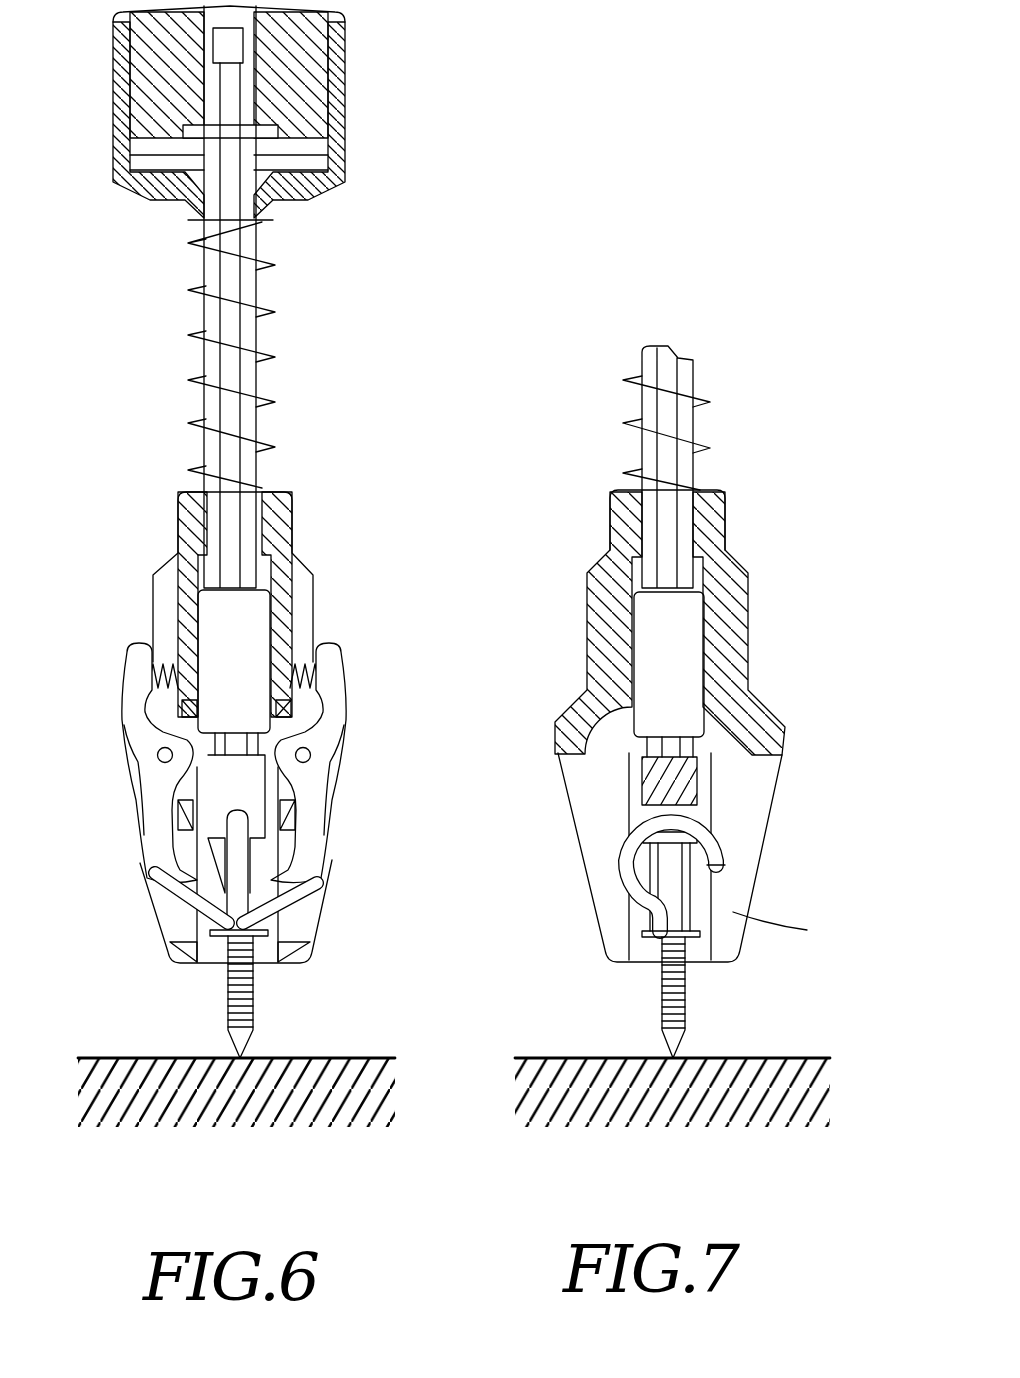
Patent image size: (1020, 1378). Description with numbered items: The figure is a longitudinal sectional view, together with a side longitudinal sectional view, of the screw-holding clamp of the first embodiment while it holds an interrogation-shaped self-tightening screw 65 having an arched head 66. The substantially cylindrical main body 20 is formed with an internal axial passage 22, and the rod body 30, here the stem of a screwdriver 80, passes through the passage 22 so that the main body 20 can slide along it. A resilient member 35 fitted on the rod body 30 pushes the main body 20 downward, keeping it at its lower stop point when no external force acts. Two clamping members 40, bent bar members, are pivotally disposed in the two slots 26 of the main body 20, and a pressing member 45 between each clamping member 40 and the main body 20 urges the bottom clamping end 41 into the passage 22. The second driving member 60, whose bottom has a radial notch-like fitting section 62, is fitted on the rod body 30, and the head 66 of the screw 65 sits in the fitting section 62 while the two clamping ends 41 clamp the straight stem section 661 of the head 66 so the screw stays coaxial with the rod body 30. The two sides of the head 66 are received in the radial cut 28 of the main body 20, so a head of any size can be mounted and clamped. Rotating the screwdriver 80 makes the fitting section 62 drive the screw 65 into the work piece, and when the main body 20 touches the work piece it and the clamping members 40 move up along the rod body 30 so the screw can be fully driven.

In FIG. 6, the screwdriver 80 is at (365, 95).
In FIG. 6, the rod body 30 is at (232, 372).
In FIG. 7, the rod body 30 is at (665, 418).
In FIG. 6, the resilient member 35 is at (188, 381).
In FIG. 6, the main body 20 is at (305, 540).
In FIG. 7, the main body 20 is at (753, 547).
In FIG. 6, the pressing member 45 is at (155, 657).
In FIG. 6, the clamping member 40 is at (362, 672).
In FIG. 7, the clamping member 40 is at (677, 873).
In FIG. 6, the second driving member 60 is at (222, 775).
In FIG. 7, the second driving member 60 is at (642, 783).
In FIG. 6, the fitting section 62 is at (243, 807).
In FIG. 7, the fitting section 62 is at (698, 800).
In FIG. 6, the passage 22 is at (200, 842).
In FIG. 6, the head 66 is at (238, 850).
In FIG. 7, the head 66 is at (626, 863).
In FIG. 6, the cut 28 is at (257, 872).
In FIG. 7, the cut 28 is at (743, 810).
In FIG. 6, the clamping end 41 is at (265, 917).
In FIG. 6, the slot 26 is at (292, 932).
In FIG. 7, the slot 26 is at (690, 923).
In FIG. 6, the straight stem section 661 is at (227, 927).
In FIG. 7, the straight stem section 661 is at (665, 930).
In FIG. 6, the self-tightening screw 65 is at (258, 992).
In FIG. 7, the self-tightening screw 65 is at (695, 990).